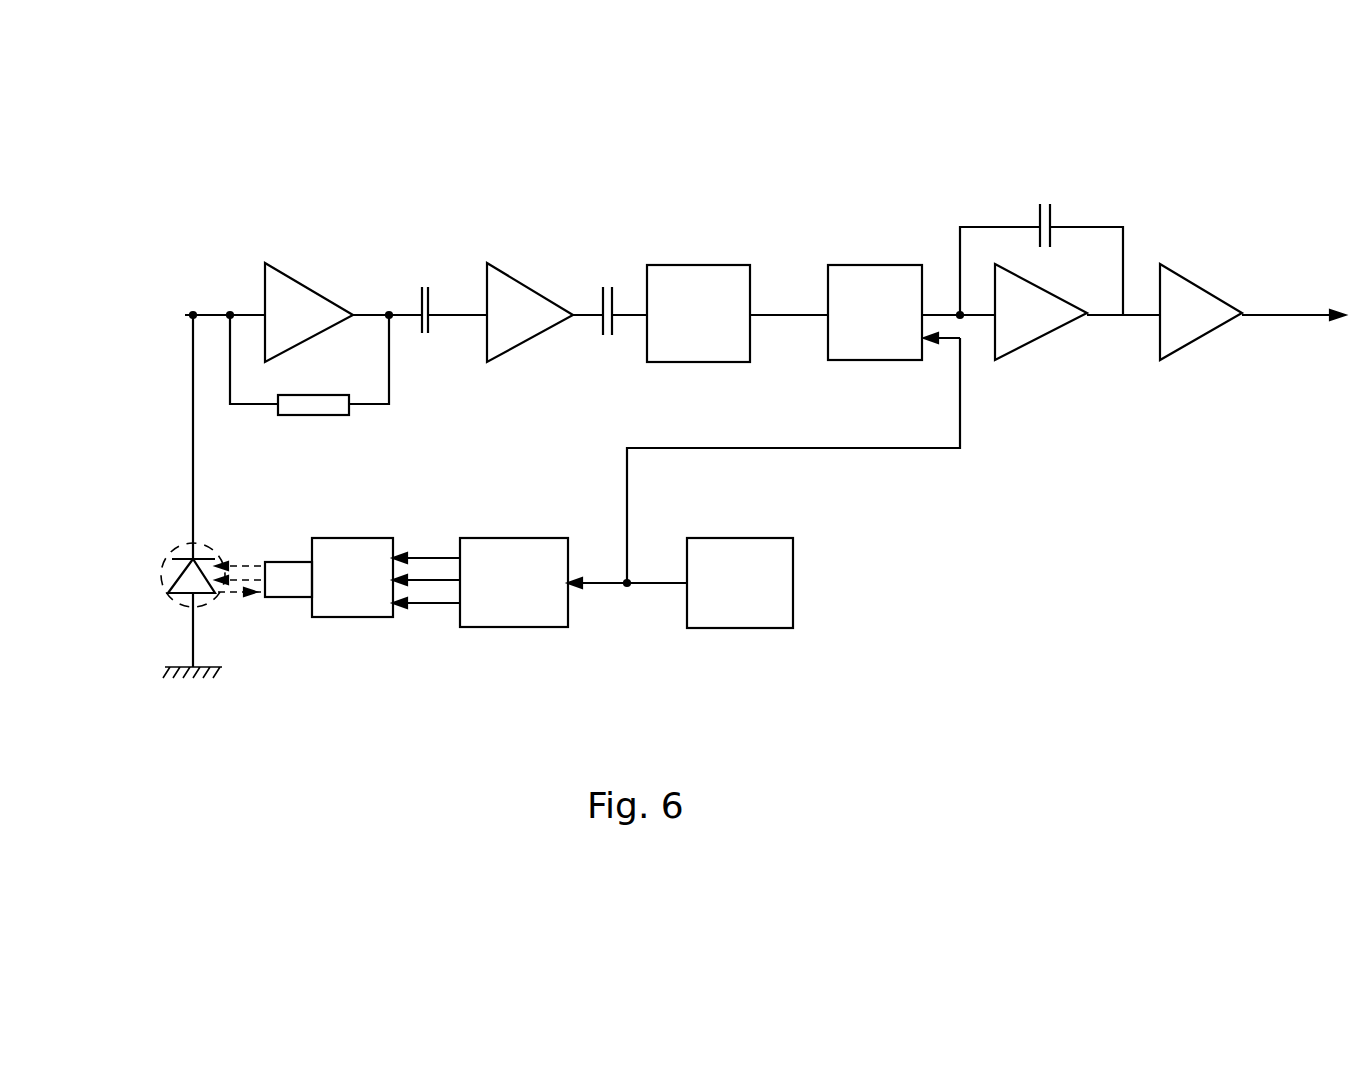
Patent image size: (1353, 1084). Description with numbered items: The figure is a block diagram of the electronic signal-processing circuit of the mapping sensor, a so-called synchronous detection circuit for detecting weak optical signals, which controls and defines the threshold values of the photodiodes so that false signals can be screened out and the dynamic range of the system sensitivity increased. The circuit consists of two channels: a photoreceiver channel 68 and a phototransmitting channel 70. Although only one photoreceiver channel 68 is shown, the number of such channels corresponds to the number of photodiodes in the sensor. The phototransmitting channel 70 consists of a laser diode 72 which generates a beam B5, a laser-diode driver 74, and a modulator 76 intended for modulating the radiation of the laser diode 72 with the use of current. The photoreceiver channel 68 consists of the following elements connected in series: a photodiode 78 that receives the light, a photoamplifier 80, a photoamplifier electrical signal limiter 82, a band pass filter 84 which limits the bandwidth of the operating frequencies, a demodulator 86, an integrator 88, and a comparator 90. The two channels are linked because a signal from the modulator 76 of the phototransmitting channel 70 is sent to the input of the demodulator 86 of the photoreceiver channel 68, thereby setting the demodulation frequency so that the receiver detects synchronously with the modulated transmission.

The photoreceiver channel 68 is at (665, 218).
The phototransmitting channel 70 is at (502, 646).
The laser diode 72 is at (345, 605).
The laser-diode driver 74 is at (438, 650).
The modulator 76 is at (773, 628).
The photodiode 78 is at (150, 582).
The photoamplifier 80 is at (304, 288).
The photoamplifier electrical signal limiter 82 is at (530, 280).
The band pass filter 84 is at (725, 265).
The demodulator 86 is at (880, 265).
The integrator 88 is at (1045, 288).
The comparator 90 is at (1185, 290).
The beam B5 is at (247, 600).